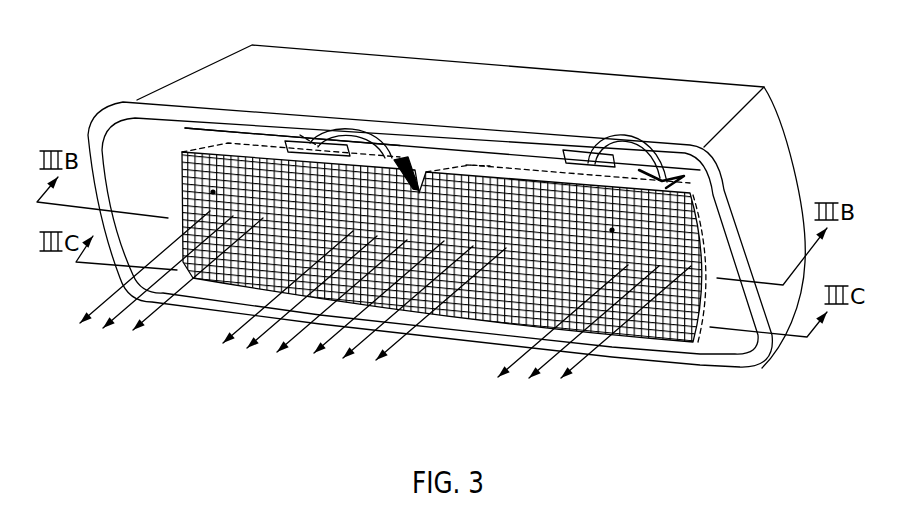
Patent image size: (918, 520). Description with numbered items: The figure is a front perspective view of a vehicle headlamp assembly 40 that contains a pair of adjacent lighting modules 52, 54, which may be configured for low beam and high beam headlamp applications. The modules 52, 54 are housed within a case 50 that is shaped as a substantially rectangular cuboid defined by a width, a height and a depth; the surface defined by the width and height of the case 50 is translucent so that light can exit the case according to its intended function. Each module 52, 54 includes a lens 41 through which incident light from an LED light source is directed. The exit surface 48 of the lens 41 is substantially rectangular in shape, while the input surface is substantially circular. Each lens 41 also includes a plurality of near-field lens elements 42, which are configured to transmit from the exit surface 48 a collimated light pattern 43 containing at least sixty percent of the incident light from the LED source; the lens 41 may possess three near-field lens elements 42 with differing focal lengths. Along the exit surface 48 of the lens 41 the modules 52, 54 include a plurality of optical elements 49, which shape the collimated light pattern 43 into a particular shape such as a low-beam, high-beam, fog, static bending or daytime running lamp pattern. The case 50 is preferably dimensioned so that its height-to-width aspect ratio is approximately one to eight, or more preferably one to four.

The vehicle headlamp assembly 40 is at (732, 56).
The lens 41 is at (368, 152).
The near-field lens elements 42 is at (406, 167).
The collimated light pattern 43 is at (233, 328).
The exit surface 48 is at (177, 167).
The optical elements 49 is at (305, 133).
The case 50 is at (719, 340).
The lighting module 52 is at (531, 142).
The lighting module 54 is at (266, 122).